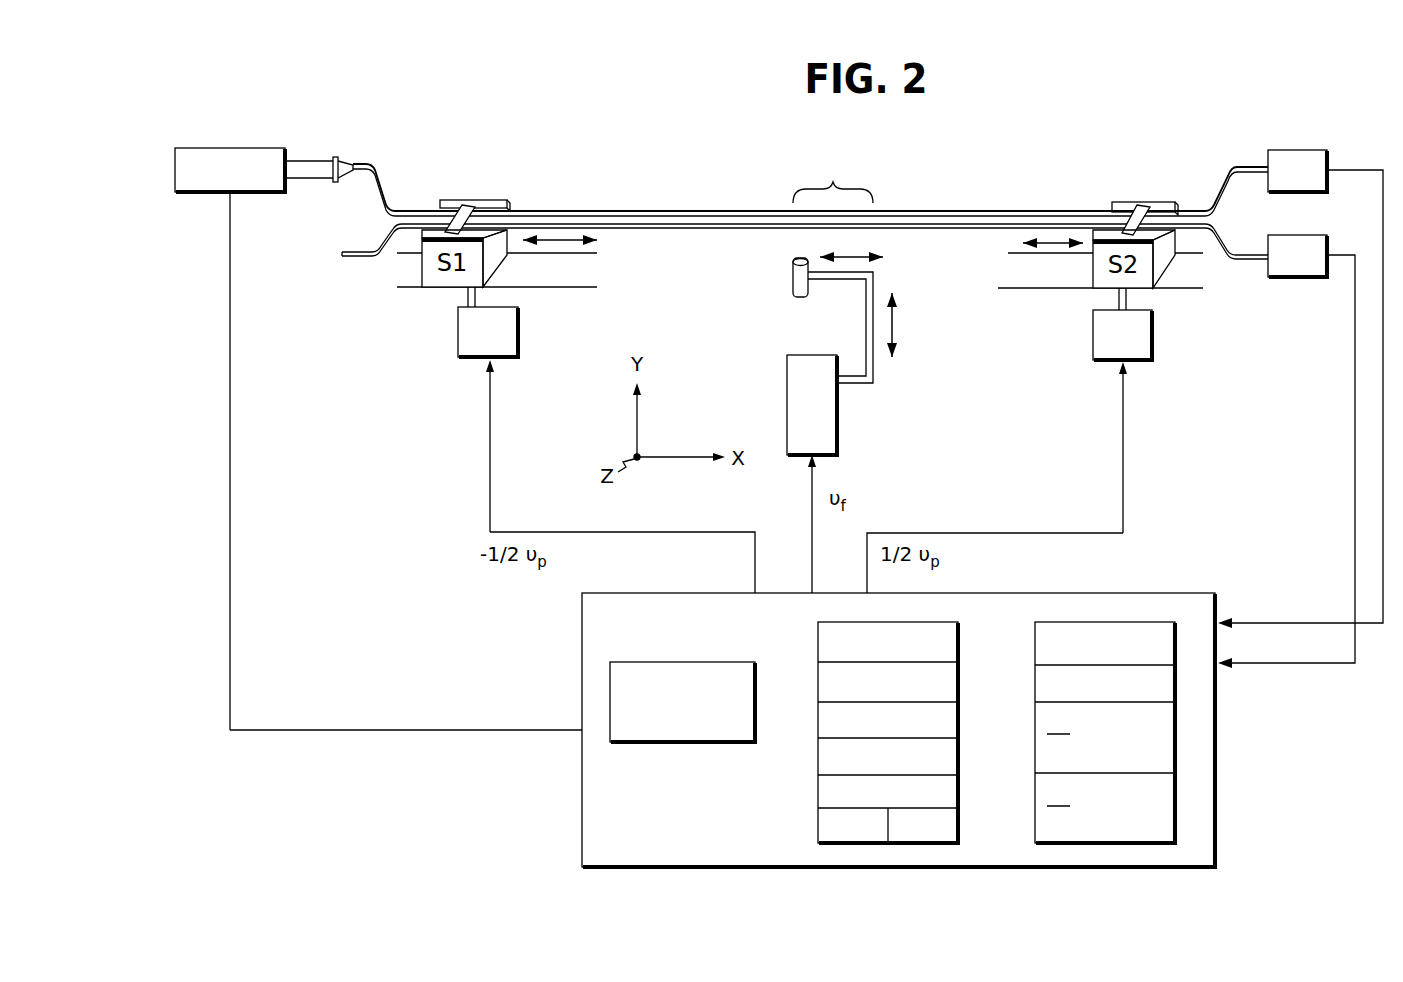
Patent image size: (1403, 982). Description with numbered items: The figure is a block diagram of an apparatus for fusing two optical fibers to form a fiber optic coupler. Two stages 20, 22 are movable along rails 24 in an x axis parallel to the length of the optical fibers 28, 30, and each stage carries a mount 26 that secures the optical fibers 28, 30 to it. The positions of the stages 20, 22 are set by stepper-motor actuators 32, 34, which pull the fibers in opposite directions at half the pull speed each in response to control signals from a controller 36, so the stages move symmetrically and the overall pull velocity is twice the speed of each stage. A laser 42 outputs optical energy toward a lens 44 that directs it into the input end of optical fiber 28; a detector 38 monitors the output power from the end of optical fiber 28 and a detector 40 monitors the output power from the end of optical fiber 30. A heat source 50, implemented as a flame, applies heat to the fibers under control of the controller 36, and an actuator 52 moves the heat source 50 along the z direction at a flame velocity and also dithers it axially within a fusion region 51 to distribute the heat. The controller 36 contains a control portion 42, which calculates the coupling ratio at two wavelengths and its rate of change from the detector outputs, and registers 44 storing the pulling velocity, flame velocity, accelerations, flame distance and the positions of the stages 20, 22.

The stage 20 is at (449, 200).
The stage 22 is at (1112, 202).
The rails 24 is at (402, 287).
The mount 26 is at (469, 209).
The optical fiber 28 is at (388, 200).
The optical fiber 30 is at (354, 256).
The actuator 32 is at (518, 350).
The actuator 34 is at (1152, 334).
The controller 36 is at (582, 778).
The detector 38 is at (1297, 150).
The detector 40 is at (1300, 277).
The laser / control portion 42 is at (225, 148).
The lens / registers 44 is at (333, 158).
The heat source 50 is at (793, 268).
The fusion region 51 is at (833, 175).
The actuator 52 is at (835, 440).